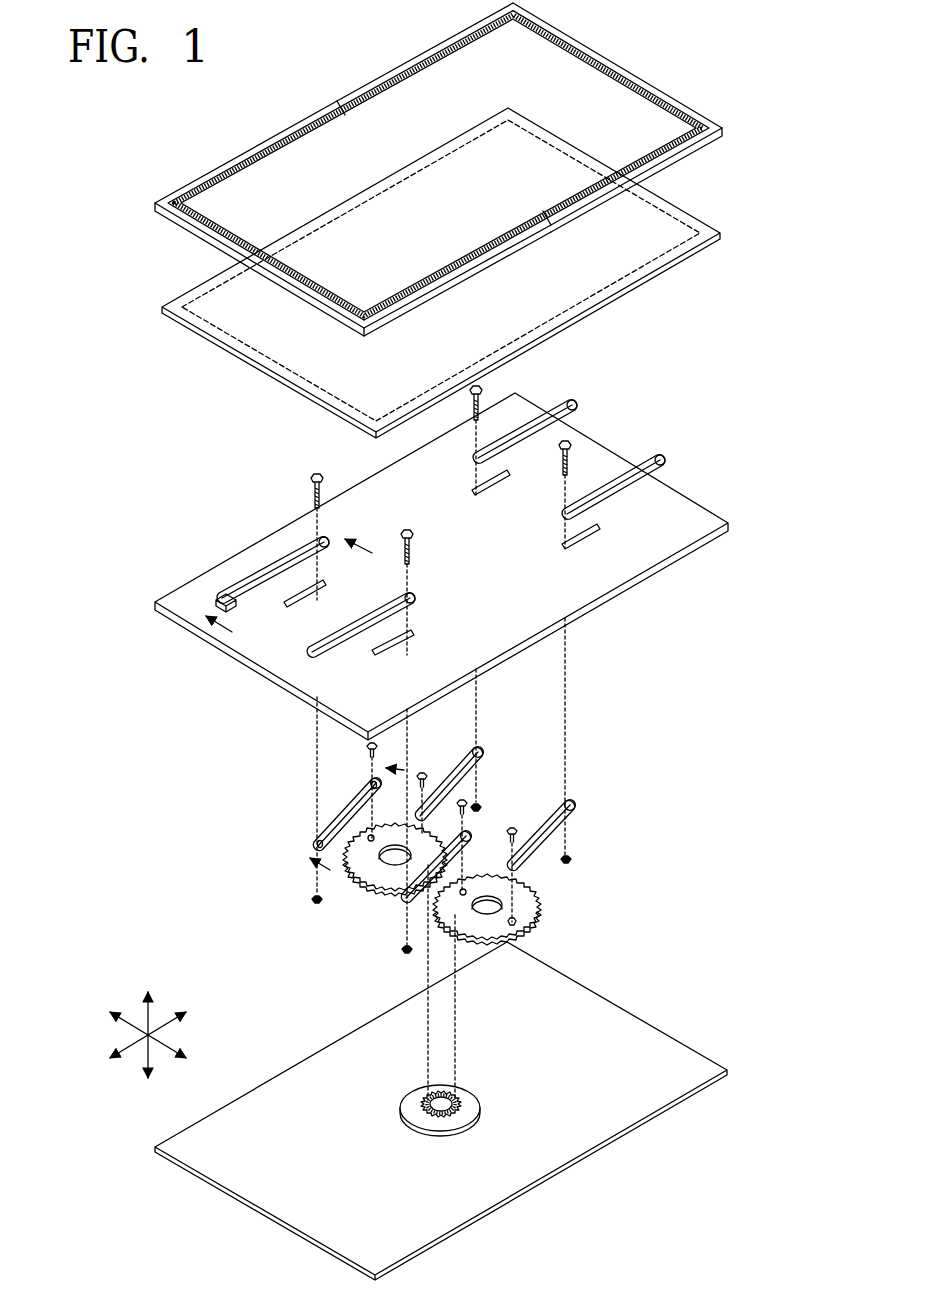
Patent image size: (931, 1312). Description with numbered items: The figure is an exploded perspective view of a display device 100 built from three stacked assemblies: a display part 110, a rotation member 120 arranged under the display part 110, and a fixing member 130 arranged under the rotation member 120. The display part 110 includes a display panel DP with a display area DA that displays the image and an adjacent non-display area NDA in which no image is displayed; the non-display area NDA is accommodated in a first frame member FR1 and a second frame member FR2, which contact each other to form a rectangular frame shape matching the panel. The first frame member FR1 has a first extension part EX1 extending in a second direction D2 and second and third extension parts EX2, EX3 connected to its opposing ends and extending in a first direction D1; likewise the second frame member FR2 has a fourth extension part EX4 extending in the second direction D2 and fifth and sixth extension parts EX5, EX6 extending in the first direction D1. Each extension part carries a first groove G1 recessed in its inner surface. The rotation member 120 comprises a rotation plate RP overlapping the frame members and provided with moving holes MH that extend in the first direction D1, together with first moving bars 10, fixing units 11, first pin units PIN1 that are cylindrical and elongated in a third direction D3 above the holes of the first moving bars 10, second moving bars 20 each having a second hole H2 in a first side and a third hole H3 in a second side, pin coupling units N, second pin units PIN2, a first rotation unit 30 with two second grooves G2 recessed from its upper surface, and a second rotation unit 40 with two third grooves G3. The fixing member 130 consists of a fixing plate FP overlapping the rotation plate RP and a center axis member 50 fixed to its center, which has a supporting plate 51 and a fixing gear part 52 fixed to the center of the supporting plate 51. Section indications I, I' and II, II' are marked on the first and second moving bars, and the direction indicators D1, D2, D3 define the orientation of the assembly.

The display device 100 is at (636, 58).
The display part 110 is at (765, 1).
The rotation member 120 is at (765, 398).
The fixing member 130 is at (765, 1292).
The first frame member FR1 is at (195, 182).
The second frame member FR2 is at (667, 90).
The first extension part EX1 is at (202, 227).
The second extension part EX2 is at (260, 152).
The third extension part EX3 is at (478, 268).
The fourth extension part EX4 is at (583, 45).
The fifth extension part EX5 is at (397, 72).
The sixth extension part EX6 is at (663, 160).
The first groove G1 is at (278, 153).
The display panel DP is at (642, 283).
The display area DA is at (572, 173).
The non-display area NDA is at (538, 128).
The rotation plate RP is at (685, 513).
The first pin unit PIN1 is at (315, 473).
The second pin unit PIN2 is at (365, 750).
The moving hole MH is at (300, 593).
The first moving bar 10 is at (262, 578).
The fixing unit 11 is at (228, 593).
The second moving bar 20 is at (348, 808).
The second hole H2 is at (330, 852).
The third hole H3 is at (358, 778).
The second groove G2 is at (377, 832).
The third groove G3 is at (477, 877).
The first rotation unit 30 is at (377, 867).
The second rotation unit 40 is at (527, 895).
The pin coupling unit N is at (310, 900).
The center axis member 50 is at (375, 946).
The supporting plate 51 is at (410, 1103).
The fixing gear part 52 is at (440, 1095).
The fixing plate FP is at (682, 1060).
The section line I is at (225, 629).
The section line I' is at (365, 553).
The section line II is at (323, 874).
The section line II' is at (396, 758).
The first direction D1 is at (161, 1029).
The second direction D2 is at (161, 1041).
The third direction D3 is at (145, 1051).